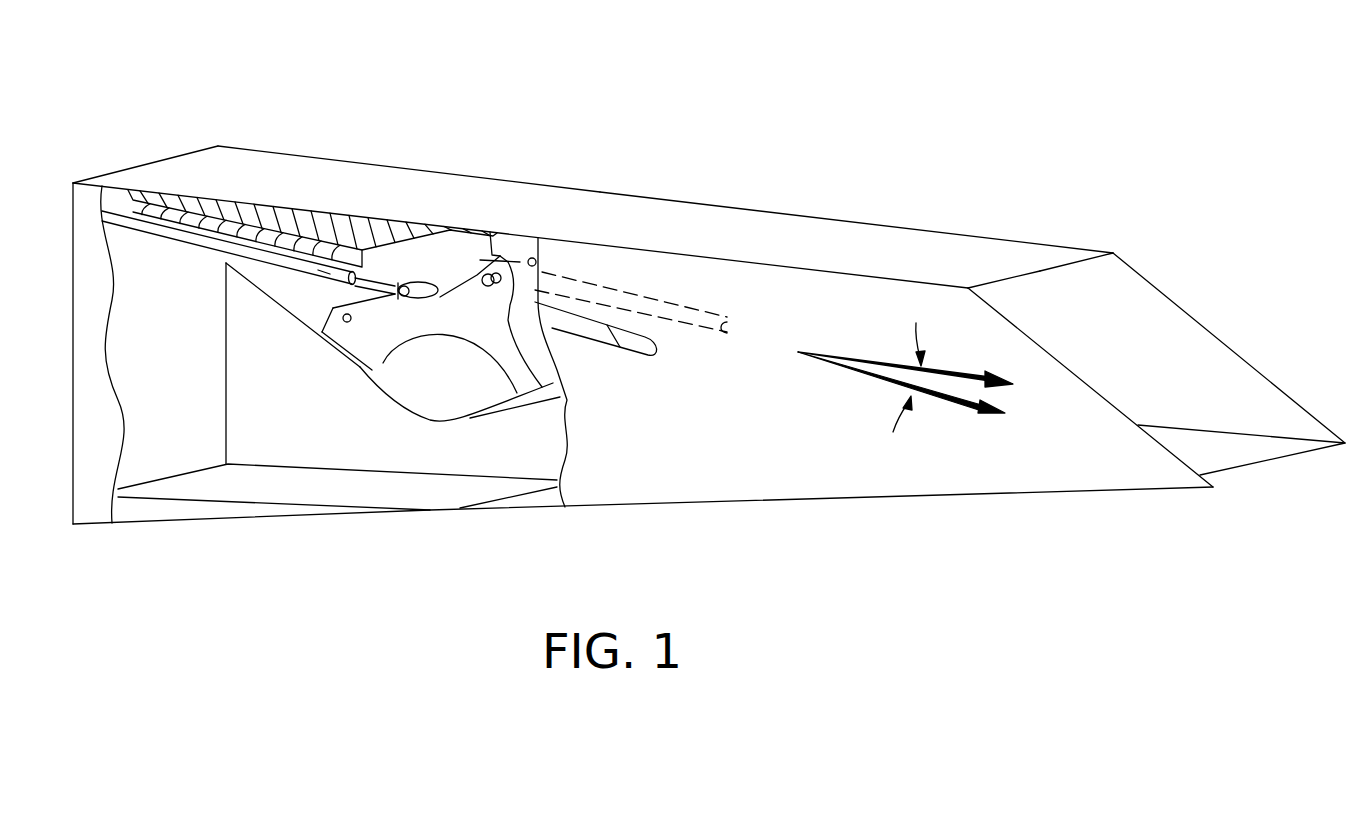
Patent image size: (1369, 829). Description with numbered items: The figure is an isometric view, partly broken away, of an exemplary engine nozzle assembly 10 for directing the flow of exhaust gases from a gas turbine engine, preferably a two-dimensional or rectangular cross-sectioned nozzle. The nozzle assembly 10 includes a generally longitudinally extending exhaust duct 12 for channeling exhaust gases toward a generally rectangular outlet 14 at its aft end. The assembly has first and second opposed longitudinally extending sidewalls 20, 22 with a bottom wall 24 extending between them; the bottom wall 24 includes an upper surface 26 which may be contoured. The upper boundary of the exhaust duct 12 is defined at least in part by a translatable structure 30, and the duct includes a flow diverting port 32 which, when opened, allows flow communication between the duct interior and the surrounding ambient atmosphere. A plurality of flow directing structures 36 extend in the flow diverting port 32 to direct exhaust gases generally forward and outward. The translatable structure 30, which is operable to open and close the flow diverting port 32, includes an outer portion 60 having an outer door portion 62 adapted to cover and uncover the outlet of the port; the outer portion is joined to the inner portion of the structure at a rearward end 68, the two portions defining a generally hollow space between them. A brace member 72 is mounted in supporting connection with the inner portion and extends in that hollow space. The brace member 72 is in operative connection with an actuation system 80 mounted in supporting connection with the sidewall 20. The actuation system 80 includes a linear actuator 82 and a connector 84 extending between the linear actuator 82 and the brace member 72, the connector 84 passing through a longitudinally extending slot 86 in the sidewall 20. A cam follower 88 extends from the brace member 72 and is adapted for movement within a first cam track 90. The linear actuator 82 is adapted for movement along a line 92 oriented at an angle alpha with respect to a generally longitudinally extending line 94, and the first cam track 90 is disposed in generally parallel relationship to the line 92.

The engine nozzle assembly 10 is at (1168, 66).
The exhaust duct 12 is at (1113, 277).
The outlet 14 is at (1218, 294).
The first sidewall 20 is at (865, 481).
The second sidewall 22 is at (295, 435).
The bottom wall 24 is at (1224, 455).
The upper surface 26 is at (197, 490).
The translatable structure 30 is at (617, 205).
The flow diverting port 32 is at (288, 215).
The flow directing structures 36 is at (207, 243).
The outer portion 60 is at (503, 188).
The outer door portion 62 is at (318, 172).
The rearward end 68 is at (1058, 252).
The brace member 72 is at (507, 350).
The actuation system 80 is at (205, 294).
The linear actuator 82 is at (320, 273).
The connector 84 is at (423, 293).
The slot 86 is at (637, 350).
The cam follower 88 is at (493, 285).
The first cam track 90 is at (687, 305).
The line 92 is at (877, 377).
The longitudinally extending line 94 is at (943, 372).